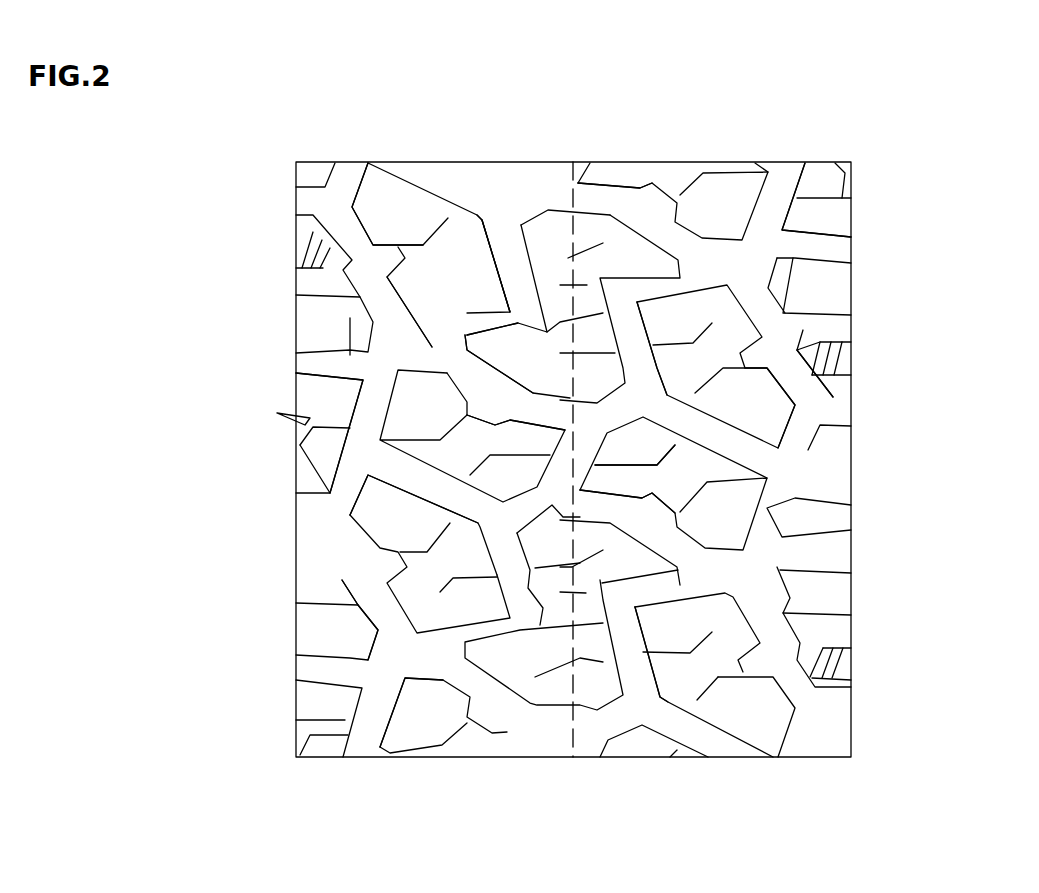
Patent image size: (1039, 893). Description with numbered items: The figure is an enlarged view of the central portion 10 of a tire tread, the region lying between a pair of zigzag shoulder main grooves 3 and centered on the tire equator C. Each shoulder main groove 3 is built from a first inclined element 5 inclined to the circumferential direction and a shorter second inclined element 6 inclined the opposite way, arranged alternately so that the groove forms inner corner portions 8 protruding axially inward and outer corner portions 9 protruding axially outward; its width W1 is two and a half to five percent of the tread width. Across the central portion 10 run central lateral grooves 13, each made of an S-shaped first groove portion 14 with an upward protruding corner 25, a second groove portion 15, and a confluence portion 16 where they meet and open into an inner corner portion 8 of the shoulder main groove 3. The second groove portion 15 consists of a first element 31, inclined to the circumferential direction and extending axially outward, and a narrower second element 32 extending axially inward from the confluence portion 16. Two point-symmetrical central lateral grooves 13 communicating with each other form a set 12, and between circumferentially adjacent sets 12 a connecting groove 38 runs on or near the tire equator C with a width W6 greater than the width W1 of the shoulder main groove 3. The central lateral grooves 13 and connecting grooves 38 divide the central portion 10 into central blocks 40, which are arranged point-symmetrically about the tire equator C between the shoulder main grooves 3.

The shoulder main groove 3 is at (338, 205).
The first inclined element 5 is at (365, 416).
The second inclined element 6 is at (780, 347).
The inner corner portion 8 is at (390, 350).
The outer corner portion 9 is at (810, 402).
The central portion 10 is at (618, 160).
The set of central lateral grooves 12 is at (650, 806).
The central lateral groove 13 is at (172, 188).
The first groove portion 14 is at (473, 377).
The second groove portion 15 is at (630, 340).
The confluence portion 16 is at (432, 347).
The upward protruding corner 25 is at (657, 705).
The first element 31 is at (502, 250).
The second element 32 is at (473, 322).
The connecting groove 38 is at (632, 502).
The central block 40 is at (398, 210).
The width of shoulder main groove W1 is at (358, 713).
The width of connecting groove W6 is at (581, 452).
The tire equator C is at (572, 131).